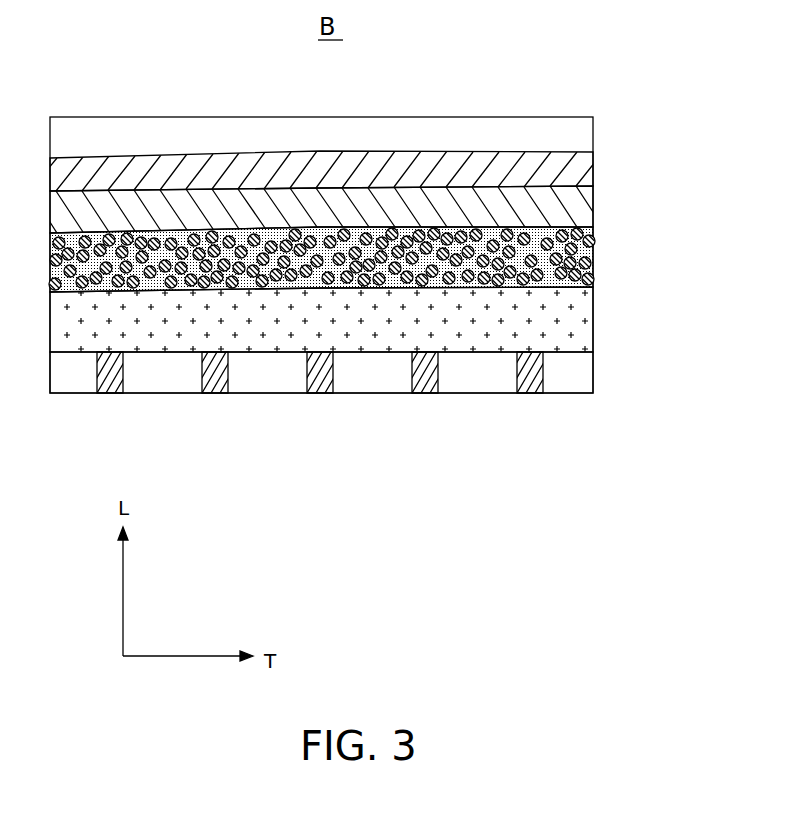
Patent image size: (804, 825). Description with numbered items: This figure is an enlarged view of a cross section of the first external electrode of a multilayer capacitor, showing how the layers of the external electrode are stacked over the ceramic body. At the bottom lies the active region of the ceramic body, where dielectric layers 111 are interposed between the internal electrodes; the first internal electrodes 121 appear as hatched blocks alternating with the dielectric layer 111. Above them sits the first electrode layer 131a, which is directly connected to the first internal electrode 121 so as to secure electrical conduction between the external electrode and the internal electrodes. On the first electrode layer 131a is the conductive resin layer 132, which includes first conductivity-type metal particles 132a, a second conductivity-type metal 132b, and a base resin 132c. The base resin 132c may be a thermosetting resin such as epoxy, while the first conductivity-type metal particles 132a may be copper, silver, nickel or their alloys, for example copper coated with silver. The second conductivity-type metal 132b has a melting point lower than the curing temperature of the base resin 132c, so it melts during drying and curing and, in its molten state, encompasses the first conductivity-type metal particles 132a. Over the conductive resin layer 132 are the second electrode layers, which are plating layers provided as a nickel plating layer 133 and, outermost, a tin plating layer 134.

The dielectric layer 111 is at (478, 380).
The first internal electrode 121 is at (550, 378).
The first electrode layer 131a is at (382, 335).
The conductive resin layer 132 is at (411, 271).
The first conductivity-type metal particle 132a is at (593, 240).
The second conductivity-type metal 132b is at (593, 257).
The base resin 132c is at (593, 280).
The nickel plating layer 133 is at (583, 210).
The tin plating layer 134 is at (583, 170).